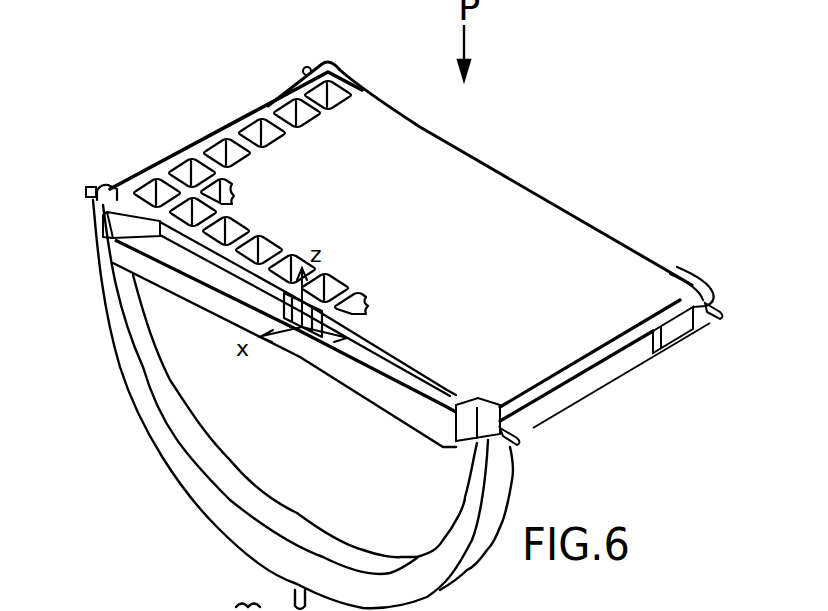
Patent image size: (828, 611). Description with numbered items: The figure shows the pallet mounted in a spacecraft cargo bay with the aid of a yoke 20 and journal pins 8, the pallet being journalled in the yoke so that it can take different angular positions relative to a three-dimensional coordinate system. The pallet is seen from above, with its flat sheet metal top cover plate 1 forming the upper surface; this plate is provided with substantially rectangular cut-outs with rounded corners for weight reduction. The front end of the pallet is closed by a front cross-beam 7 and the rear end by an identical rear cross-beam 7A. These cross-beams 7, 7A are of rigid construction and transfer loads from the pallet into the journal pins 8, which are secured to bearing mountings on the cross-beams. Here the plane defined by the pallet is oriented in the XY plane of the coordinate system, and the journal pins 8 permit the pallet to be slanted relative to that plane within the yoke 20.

The top cover plate 1 is at (532, 236).
The front cross-beam 7 is at (599, 354).
The rear cross-beam 7A is at (196, 146).
The journal pins 8 is at (303, 68).
The yoke 20 is at (158, 438).